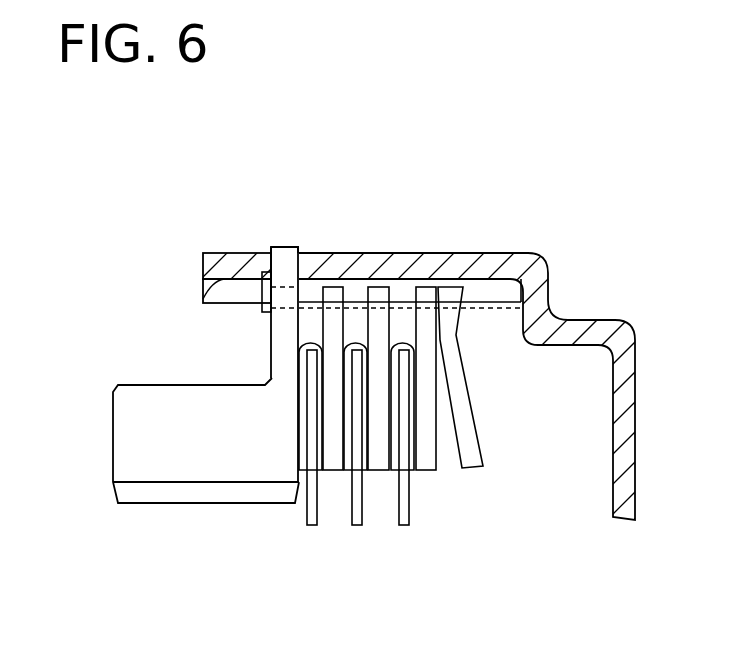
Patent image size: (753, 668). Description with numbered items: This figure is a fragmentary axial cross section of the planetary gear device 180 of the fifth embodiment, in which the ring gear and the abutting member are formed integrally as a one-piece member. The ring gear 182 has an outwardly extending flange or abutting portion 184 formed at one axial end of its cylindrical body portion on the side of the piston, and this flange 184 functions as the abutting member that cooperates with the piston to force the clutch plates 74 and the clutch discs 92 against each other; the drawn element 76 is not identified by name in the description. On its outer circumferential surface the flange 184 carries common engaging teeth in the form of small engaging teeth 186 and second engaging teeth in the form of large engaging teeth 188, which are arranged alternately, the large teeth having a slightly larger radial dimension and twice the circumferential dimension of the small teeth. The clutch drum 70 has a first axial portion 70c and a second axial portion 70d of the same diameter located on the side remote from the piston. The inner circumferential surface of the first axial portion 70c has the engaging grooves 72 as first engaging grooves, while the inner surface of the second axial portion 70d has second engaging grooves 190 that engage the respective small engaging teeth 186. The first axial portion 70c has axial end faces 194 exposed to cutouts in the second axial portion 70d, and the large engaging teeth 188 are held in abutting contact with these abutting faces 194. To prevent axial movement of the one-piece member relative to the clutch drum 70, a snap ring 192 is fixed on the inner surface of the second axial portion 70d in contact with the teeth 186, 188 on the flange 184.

The planetary gear device 180 is at (603, 187).
The clutch drum 70 is at (510, 263).
The first axial portion 70c is at (452, 263).
The second axial portion 70d is at (210, 262).
The engaging grooves 72 is at (493, 281).
The clutch plates 74 is at (380, 432).
The contact leg 76 is at (378, 292).
The clutch discs 92 is at (402, 510).
The ring gear 182 is at (122, 443).
The flange or abutting portion 184 is at (285, 341).
The small engaging teeth 186 is at (290, 292).
The large engaging teeth 188 is at (283, 255).
The second engaging grooves 190 is at (202, 293).
The snap ring 192 is at (262, 282).
The axial end faces 194 is at (277, 265).